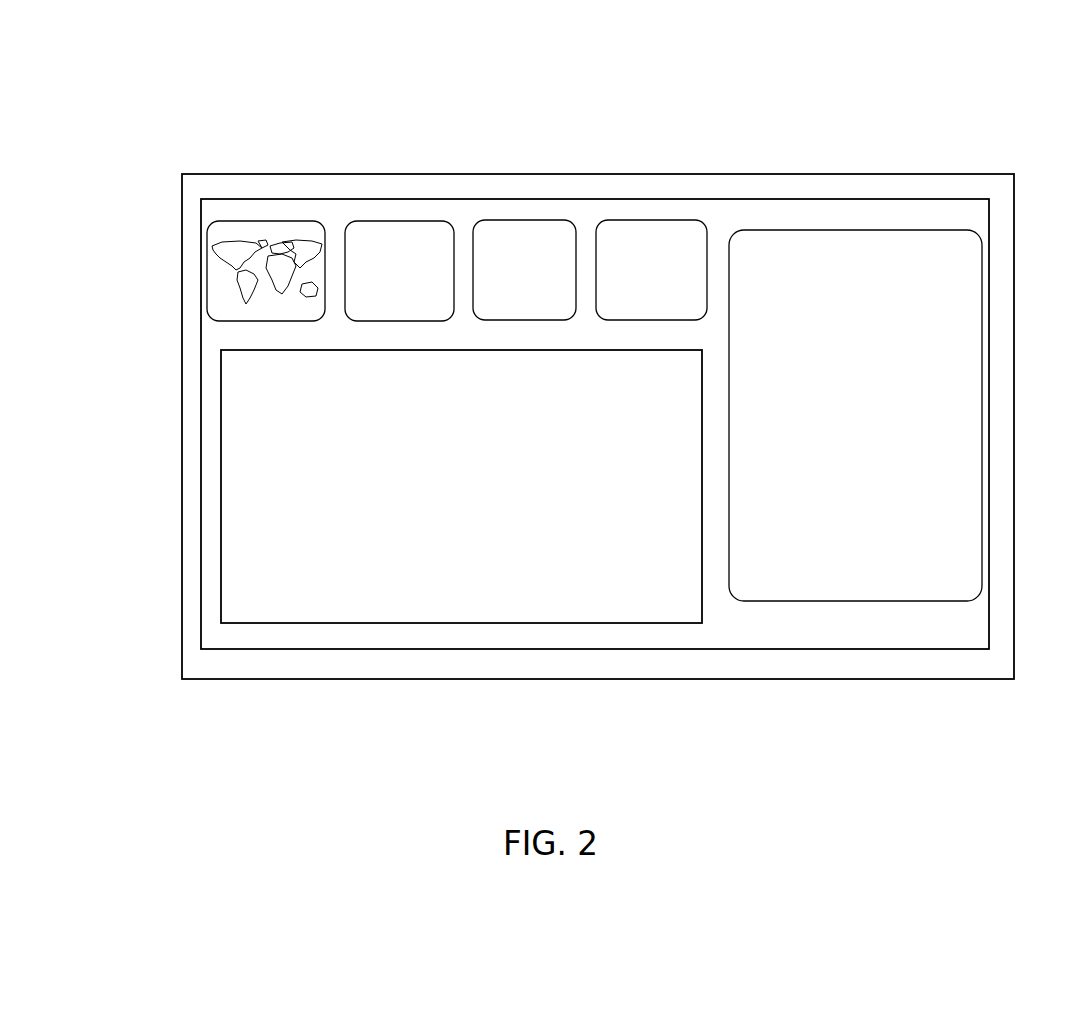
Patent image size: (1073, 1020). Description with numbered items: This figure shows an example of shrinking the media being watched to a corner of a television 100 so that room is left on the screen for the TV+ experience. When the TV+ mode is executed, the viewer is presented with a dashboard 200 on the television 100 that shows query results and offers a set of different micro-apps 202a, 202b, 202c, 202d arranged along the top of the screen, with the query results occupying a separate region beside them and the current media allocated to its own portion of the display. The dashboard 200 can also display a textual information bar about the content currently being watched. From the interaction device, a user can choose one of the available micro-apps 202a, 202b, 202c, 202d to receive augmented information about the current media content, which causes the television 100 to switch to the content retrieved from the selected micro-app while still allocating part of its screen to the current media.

The television 100 is at (598, 356).
The dashboard 200 is at (855, 364).
The micro-app 202a is at (262, 220).
The micro-app 202b is at (399, 226).
The micro-app 202c is at (533, 217).
The NY Times icon 202d is at (680, 218).